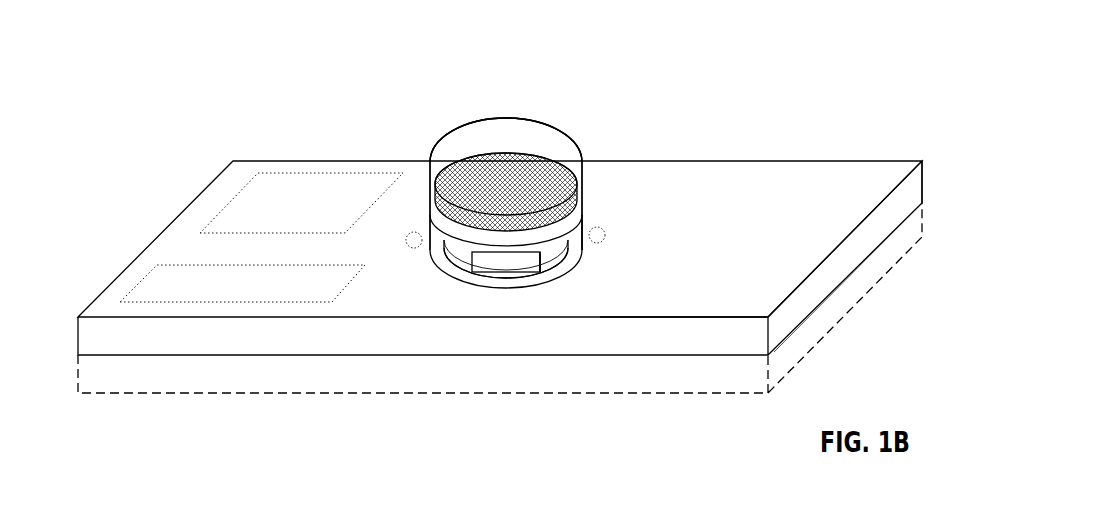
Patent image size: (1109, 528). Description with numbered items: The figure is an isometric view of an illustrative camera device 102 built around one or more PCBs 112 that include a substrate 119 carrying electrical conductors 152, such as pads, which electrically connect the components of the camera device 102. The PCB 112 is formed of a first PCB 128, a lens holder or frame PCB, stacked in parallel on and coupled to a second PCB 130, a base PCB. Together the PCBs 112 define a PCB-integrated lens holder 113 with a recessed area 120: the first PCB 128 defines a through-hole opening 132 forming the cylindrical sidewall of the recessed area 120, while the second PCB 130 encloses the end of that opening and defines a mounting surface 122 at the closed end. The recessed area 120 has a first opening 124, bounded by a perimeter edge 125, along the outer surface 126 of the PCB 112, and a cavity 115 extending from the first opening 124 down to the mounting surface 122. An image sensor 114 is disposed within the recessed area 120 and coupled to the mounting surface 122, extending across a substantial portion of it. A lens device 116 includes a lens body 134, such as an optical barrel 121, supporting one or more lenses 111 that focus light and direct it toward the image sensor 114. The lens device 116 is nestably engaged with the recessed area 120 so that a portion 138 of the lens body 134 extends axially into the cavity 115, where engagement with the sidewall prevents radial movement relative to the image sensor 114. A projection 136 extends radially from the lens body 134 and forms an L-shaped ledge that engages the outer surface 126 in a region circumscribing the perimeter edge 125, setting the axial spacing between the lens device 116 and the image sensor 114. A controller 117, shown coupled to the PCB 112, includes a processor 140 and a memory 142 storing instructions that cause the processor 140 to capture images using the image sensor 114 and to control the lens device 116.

The camera device 102 is at (278, 132).
The lens 111 is at (490, 172).
The PCB 112 is at (942, 198).
The PCB-integrated lens holder 113 is at (550, 130).
The image sensor 114 is at (503, 265).
The cavity 115 is at (516, 243).
The lens device 116 is at (478, 118).
The controller 117 is at (243, 220).
The substrate 119 is at (730, 198).
The recessed area 120 is at (457, 258).
The optical barrel 121 is at (452, 140).
The mounting surface 122 is at (548, 260).
The first opening 124 is at (560, 268).
The perimeter edge 125 is at (493, 278).
The outer surface 126 is at (637, 313).
The first PCB 128 is at (847, 253).
The second PCB 130 is at (827, 332).
The through-hole opening 132 is at (585, 250).
The lens body 134 is at (582, 220).
The projection 136 is at (445, 248).
The portion 138 is at (433, 217).
The processor 140 is at (260, 193).
The memory 142 is at (153, 287).
The electrical conductors 152 is at (407, 233).